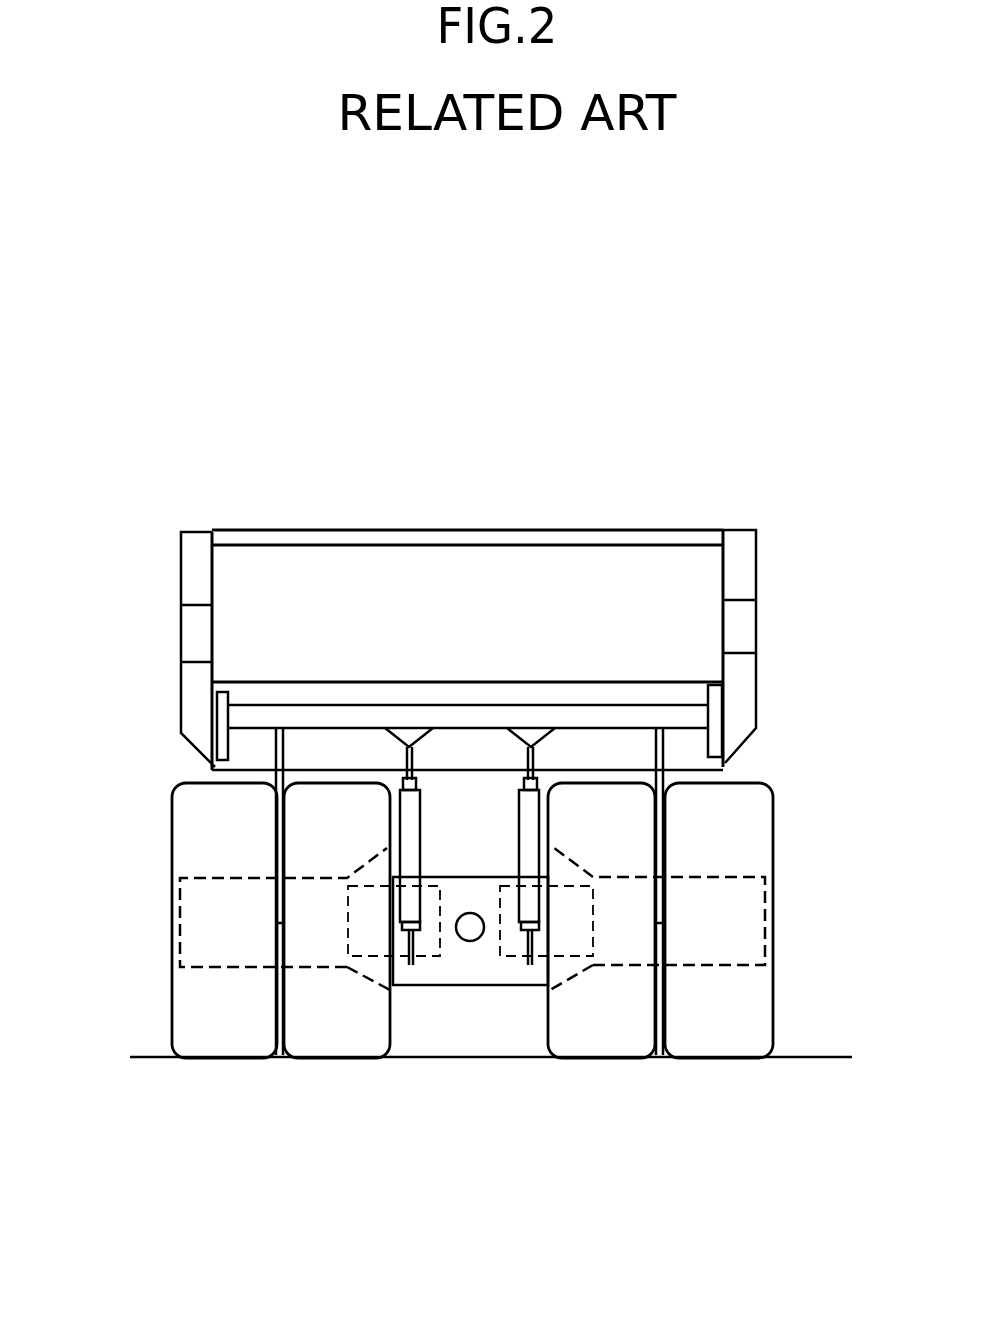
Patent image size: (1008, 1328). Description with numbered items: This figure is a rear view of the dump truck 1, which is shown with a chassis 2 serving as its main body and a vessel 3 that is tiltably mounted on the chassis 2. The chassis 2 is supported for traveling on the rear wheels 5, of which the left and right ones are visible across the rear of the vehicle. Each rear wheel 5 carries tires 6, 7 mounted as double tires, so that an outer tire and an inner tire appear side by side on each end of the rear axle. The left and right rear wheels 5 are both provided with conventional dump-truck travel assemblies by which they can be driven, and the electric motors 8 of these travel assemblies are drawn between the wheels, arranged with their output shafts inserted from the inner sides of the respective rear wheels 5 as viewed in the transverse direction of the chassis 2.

The dump truck 1 is at (177, 532).
The chassis 2 is at (468, 792).
The vessel 3 is at (480, 567).
The rear wheels 5 is at (170, 817).
The tire 6 is at (223, 1058).
The tire 7 is at (315, 1053).
The electric motors 8 is at (378, 958).